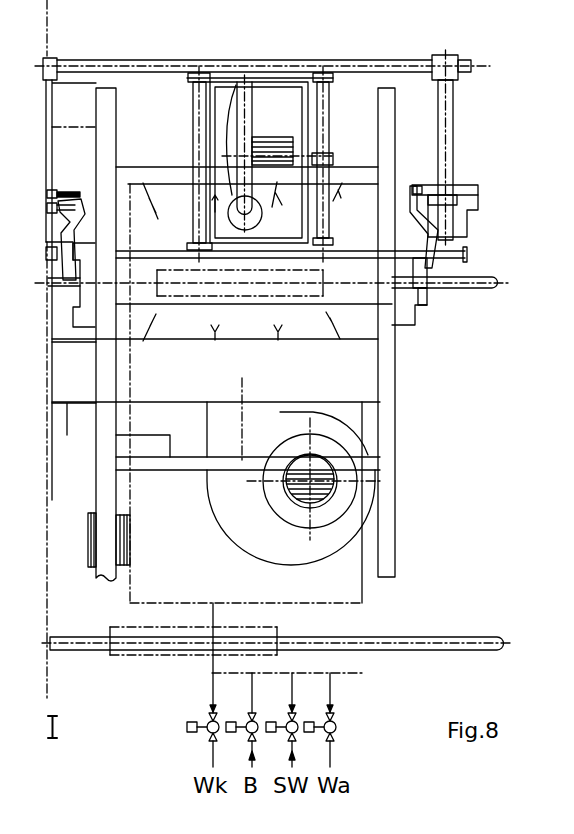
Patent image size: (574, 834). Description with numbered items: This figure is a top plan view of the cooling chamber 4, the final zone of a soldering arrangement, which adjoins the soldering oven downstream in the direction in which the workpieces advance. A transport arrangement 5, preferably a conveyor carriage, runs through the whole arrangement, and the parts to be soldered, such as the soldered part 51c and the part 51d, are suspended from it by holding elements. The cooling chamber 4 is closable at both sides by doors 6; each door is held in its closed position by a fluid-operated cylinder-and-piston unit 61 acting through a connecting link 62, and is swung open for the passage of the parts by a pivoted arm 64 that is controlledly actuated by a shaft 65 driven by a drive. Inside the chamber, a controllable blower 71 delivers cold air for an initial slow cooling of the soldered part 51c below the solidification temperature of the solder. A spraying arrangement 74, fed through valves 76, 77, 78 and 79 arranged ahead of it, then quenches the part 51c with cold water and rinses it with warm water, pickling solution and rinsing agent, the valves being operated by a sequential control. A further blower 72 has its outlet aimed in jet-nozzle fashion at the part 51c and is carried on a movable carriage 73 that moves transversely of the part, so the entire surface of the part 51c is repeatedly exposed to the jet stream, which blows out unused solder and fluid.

The cooling chamber 4 is at (296, 394).
The transport arrangement 5 is at (483, 277).
The doors 6 is at (410, 313).
The soldered part 51c is at (317, 288).
The part to be soldered 51d is at (123, 657).
The fluid-operated cylinder-and-piston unit 61 is at (458, 184).
The connecting link 62 is at (411, 207).
The pivoted arm 64 is at (452, 112).
The shaft 65 is at (414, 62).
The controllable blower 71 is at (365, 505).
The blower 72 is at (247, 108).
The movable carriage 73 is at (188, 88).
The spraying arrangement 74 is at (163, 184).
The valve 76 is at (212, 710).
The valve 77 is at (252, 710).
The valve 78 is at (293, 710).
The valve 79 is at (332, 710).